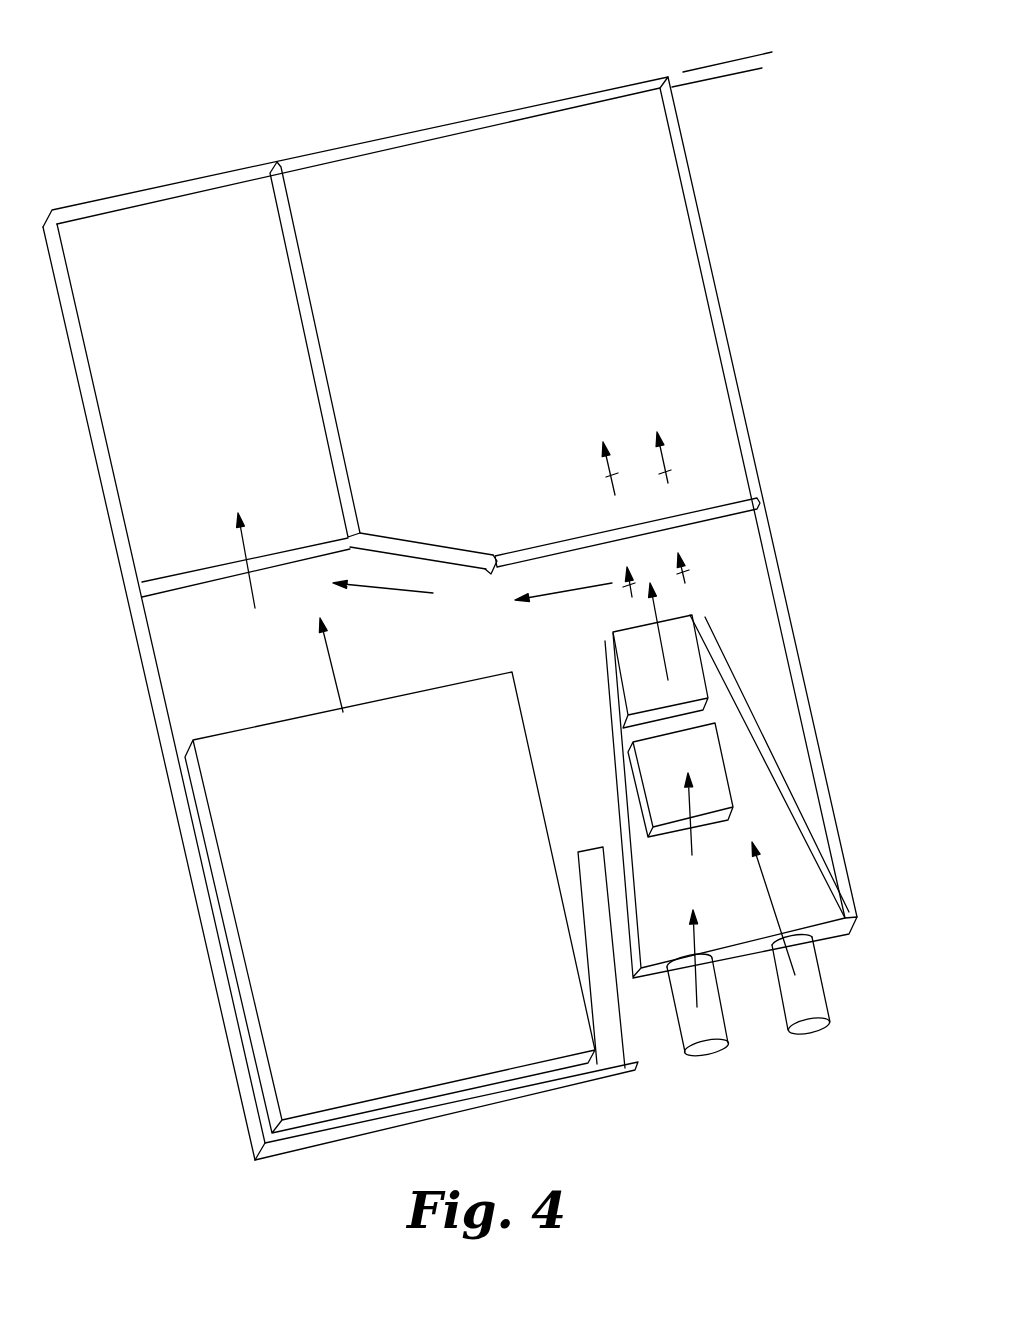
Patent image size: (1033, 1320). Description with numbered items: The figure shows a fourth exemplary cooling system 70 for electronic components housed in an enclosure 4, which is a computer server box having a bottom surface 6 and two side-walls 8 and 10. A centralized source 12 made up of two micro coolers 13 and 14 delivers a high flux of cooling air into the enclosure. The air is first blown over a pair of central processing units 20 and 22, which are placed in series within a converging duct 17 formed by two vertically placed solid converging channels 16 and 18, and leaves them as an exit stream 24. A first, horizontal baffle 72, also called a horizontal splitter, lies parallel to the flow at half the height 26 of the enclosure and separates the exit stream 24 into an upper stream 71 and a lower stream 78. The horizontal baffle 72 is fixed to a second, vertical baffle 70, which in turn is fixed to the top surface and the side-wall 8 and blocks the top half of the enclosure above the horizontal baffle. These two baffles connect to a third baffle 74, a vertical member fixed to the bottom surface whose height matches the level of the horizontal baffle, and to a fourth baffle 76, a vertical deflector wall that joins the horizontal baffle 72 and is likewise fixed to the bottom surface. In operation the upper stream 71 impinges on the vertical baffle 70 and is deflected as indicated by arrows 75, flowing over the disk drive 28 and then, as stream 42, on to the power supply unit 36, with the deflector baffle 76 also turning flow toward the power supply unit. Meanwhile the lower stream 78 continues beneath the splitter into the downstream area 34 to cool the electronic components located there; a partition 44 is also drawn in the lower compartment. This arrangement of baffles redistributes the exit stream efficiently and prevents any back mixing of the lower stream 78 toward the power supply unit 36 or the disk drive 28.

The enclosure 4 is at (293, 165).
The bottom surface 6 is at (167, 665).
The side-wall 8 is at (700, 340).
The side-wall 10 is at (178, 852).
The centralized source 12 is at (857, 1107).
The micro cooler 13 is at (708, 1050).
The micro cooler 14 is at (815, 1030).
The converging channel 16 is at (827, 903).
The converging duct 17 is at (783, 872).
The converging channel 18 is at (632, 925).
The central processing unit 20 is at (693, 758).
The central processing unit 22 is at (690, 665).
The exit stream 24 is at (648, 650).
The height 26 is at (728, 75).
The disk drive 28 is at (347, 1095).
The downstream area 34 is at (585, 340).
The power supply unit 36 is at (192, 218).
The stream 42 is at (330, 673).
The partition shelf 44 is at (233, 545).
The cooling system / vertical baffle 70 is at (745, 532).
The upper stream 71 is at (612, 584).
The horizontal baffle 72 is at (750, 498).
The third baffle 74 is at (490, 575).
The arrows 75 is at (568, 595).
The fourth baffle 76 is at (417, 560).
The lower stream 78 is at (613, 475).